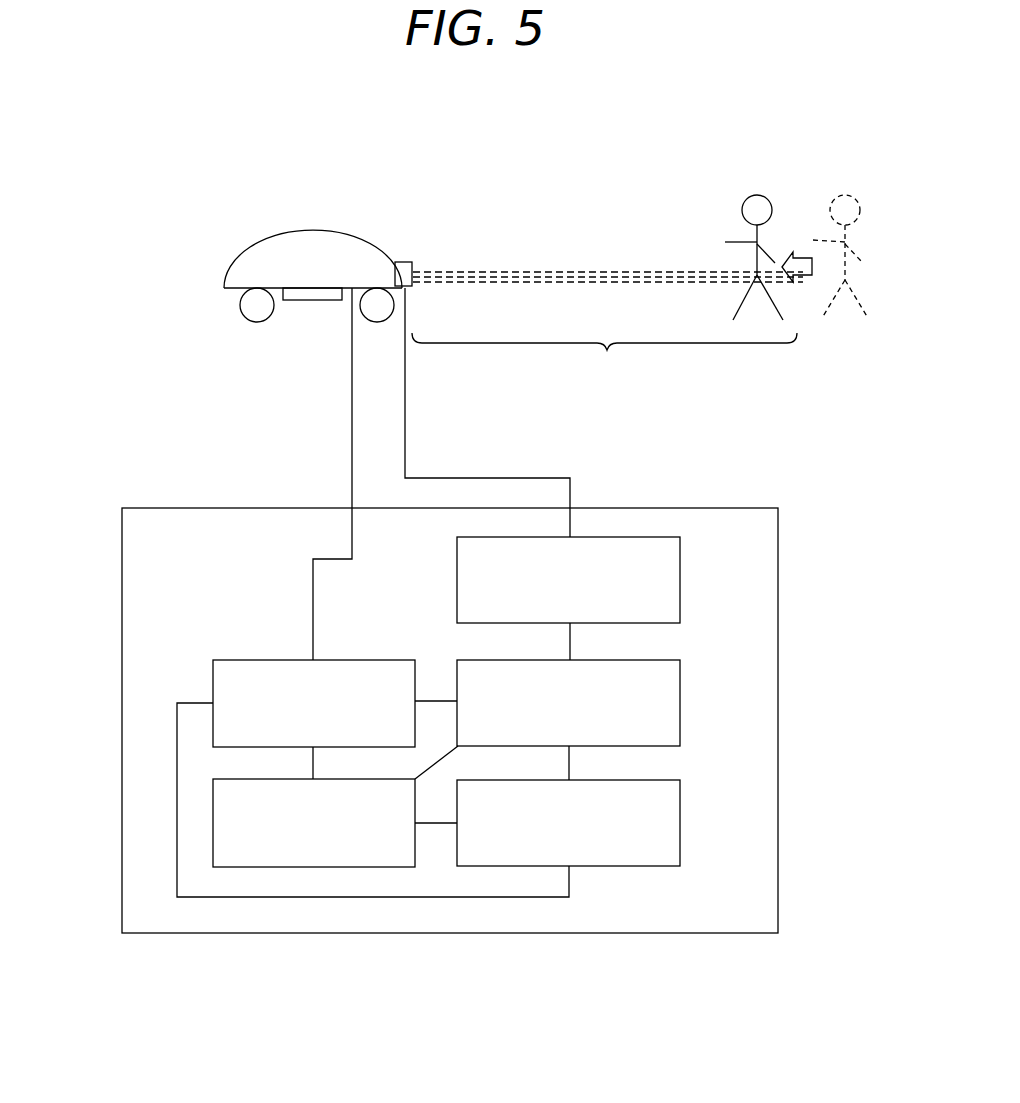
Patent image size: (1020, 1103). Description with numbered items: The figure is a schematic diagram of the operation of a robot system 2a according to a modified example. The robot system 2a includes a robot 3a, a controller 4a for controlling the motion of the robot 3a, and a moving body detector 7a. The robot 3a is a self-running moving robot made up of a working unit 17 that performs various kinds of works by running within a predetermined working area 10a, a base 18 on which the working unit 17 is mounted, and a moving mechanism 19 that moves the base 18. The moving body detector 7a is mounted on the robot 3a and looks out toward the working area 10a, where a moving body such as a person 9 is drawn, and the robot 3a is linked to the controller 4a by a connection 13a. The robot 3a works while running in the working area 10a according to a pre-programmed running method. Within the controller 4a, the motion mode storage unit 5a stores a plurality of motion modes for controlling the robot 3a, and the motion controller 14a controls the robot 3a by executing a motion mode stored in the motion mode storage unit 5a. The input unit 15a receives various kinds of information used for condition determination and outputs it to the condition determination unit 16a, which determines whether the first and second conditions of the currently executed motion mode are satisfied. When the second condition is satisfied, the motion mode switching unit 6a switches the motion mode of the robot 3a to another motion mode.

The robot system 2a is at (314, 152).
The robot 3a is at (260, 247).
The base 18 is at (342, 240).
The moving body detector 7a is at (405, 262).
The moving mechanism 19 is at (262, 307).
The working unit 17 is at (312, 298).
The person 9 is at (758, 237).
The working area 10a is at (607, 328).
The cable 13a is at (350, 425).
The controller 4a is at (272, 507).
The input unit 15a is at (680, 577).
The motion controller 14a is at (213, 682).
The condition determination unit 16a is at (680, 697).
The motion mode storage unit 5a is at (213, 815).
The motion mode switching unit 6a is at (680, 818).